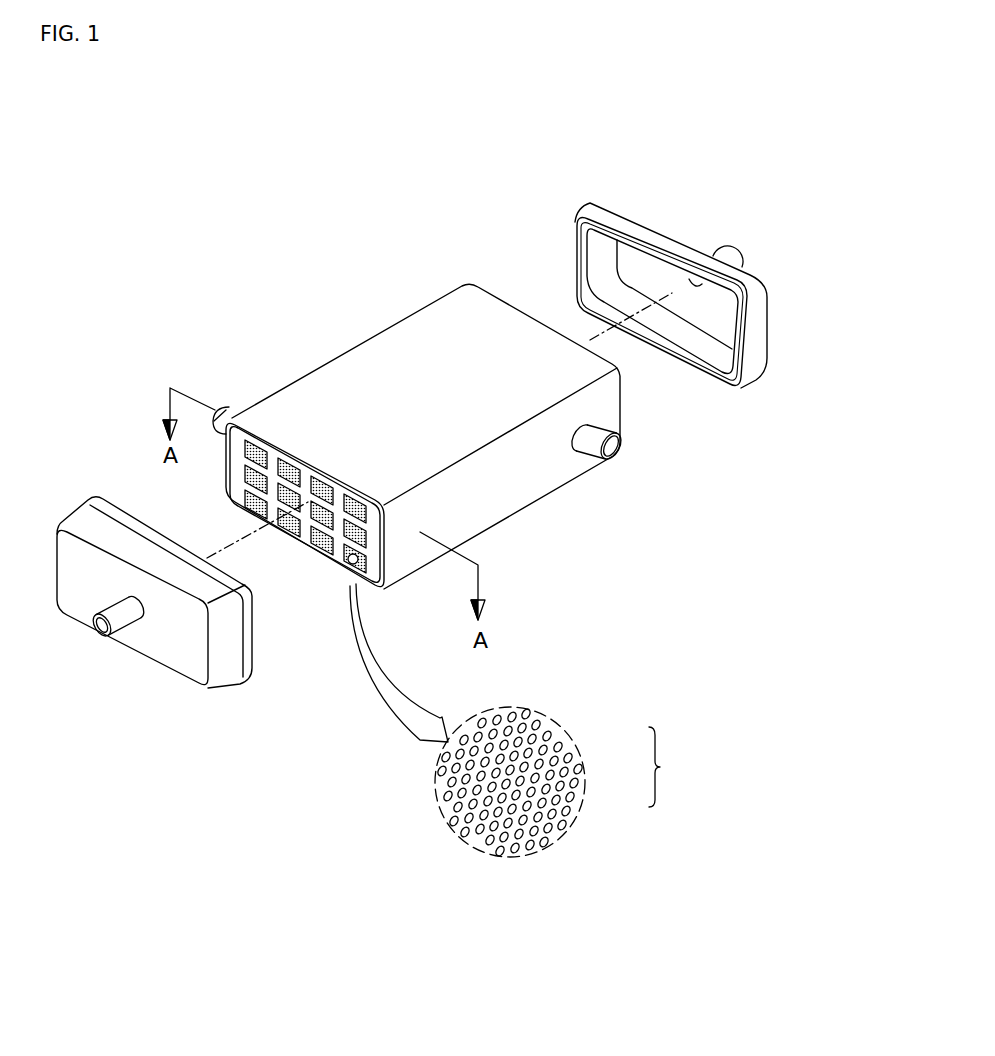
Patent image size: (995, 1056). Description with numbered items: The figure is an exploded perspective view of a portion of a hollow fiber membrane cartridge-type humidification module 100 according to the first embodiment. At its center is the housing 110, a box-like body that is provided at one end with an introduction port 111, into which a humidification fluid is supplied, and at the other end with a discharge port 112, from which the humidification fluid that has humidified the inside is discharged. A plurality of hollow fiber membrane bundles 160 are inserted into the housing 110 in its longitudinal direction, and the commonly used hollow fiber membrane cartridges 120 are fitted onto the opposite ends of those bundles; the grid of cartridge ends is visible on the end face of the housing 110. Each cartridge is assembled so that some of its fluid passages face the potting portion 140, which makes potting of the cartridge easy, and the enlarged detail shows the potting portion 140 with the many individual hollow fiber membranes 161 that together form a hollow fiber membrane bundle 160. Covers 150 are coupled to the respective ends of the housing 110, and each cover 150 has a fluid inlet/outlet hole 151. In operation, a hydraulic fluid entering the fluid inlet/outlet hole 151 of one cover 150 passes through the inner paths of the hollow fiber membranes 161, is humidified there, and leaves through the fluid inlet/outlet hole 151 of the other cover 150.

The hollow fiber membrane cartridge-type humidification module 100 is at (192, 224).
The housing 110 is at (352, 340).
The introduction port 111 is at (228, 411).
The discharge port 112 is at (613, 450).
The commonly used hollow fiber membrane cartridge 120 is at (236, 502).
The potting portion 140 is at (307, 537).
The cover 150 is at (227, 691).
The fluid inlet/outlet hole 151 is at (122, 614).
The hollow fiber membrane bundle 160 is at (674, 767).
The hollow fiber membrane 161 is at (553, 743).